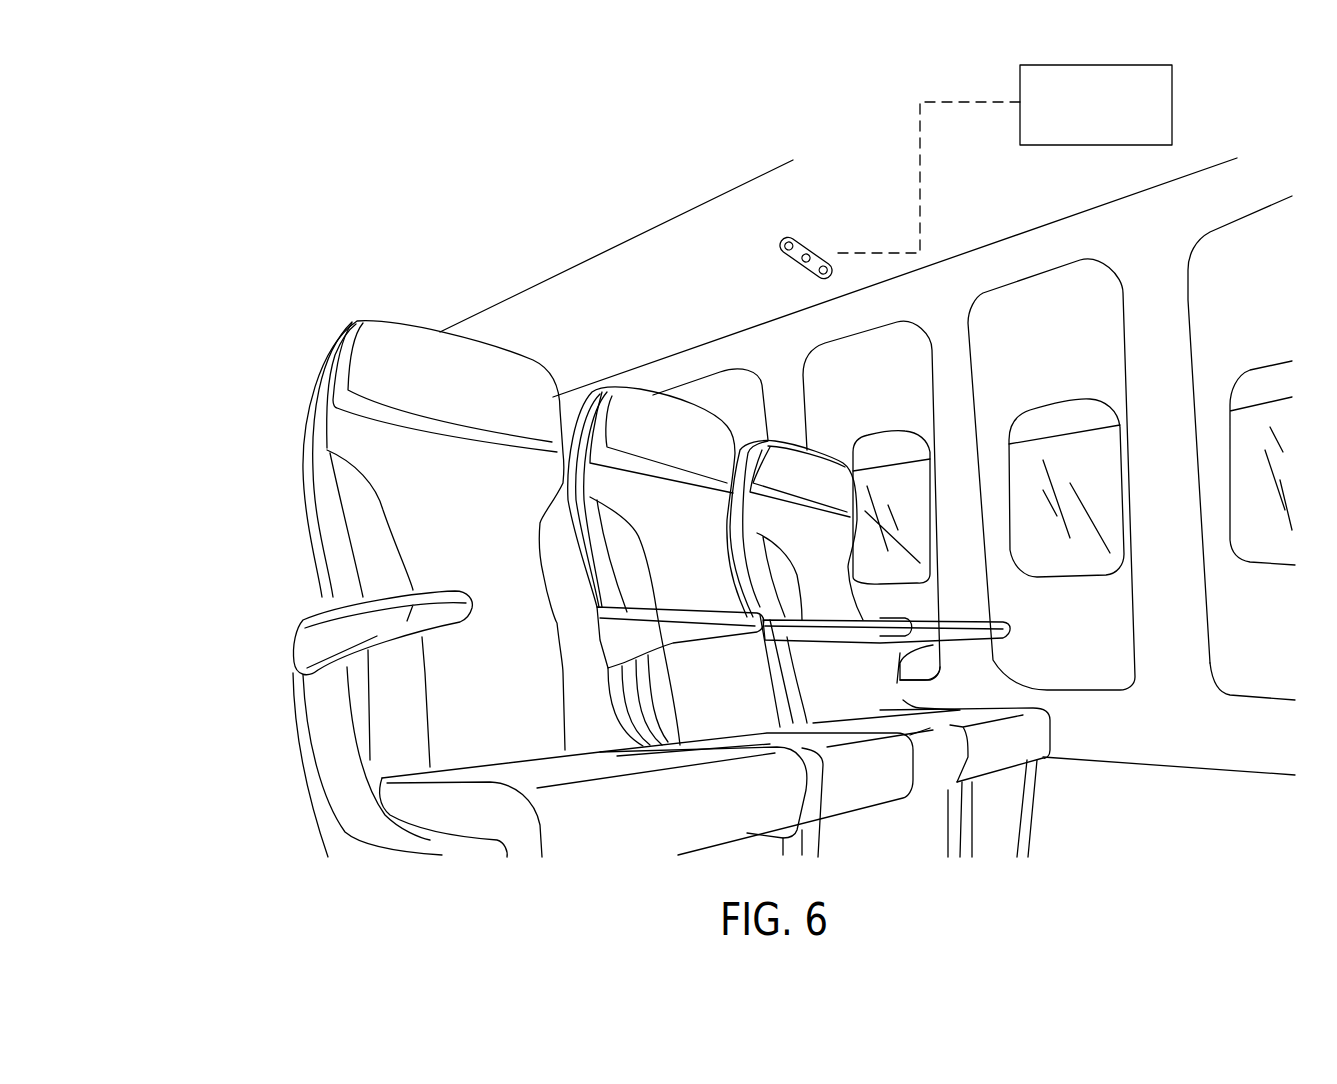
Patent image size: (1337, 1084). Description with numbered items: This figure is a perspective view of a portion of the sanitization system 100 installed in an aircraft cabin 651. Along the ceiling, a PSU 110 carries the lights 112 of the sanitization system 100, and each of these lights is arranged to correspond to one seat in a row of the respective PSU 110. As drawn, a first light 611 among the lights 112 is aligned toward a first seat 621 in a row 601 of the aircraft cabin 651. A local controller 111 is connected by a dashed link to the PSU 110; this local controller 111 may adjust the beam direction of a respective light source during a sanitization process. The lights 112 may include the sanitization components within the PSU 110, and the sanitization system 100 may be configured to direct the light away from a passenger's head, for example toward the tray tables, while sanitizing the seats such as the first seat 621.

The sanitization system 100 is at (422, 200).
The PSU 110 is at (836, 206).
The local controller 111 is at (1120, 137).
The lights 112 is at (750, 242).
The row 601 is at (538, 589).
The first light 611 is at (775, 237).
The first seat 621 is at (465, 519).
The aircraft cabin 651 is at (315, 257).